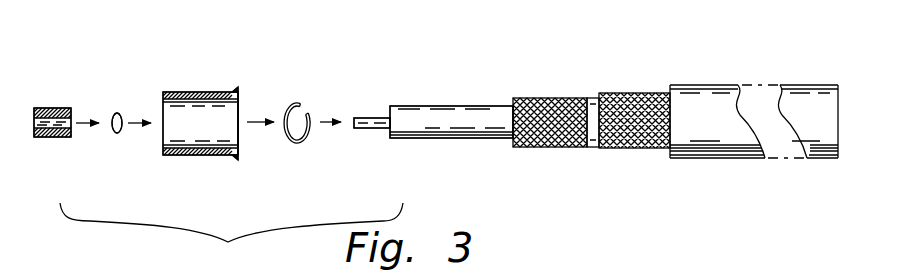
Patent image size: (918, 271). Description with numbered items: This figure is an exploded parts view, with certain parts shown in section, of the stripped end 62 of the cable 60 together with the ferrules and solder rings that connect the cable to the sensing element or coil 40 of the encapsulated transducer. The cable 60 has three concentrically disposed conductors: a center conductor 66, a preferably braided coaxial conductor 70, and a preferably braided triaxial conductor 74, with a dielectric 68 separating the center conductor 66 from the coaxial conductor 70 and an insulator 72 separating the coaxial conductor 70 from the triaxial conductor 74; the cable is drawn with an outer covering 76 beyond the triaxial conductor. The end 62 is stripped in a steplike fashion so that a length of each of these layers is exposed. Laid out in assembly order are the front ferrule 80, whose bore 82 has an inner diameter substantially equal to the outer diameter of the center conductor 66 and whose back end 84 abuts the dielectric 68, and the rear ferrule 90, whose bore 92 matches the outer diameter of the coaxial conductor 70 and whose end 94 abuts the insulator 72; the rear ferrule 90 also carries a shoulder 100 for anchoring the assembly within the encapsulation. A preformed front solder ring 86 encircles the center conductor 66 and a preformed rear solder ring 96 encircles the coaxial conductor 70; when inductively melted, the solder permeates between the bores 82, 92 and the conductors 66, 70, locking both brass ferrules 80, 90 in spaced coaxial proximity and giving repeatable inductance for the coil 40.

The sensing element 40 is at (231, 237).
The cable 60 is at (711, 70).
The stripped end of cable 62 is at (467, 92).
The center conductor 66 is at (376, 128).
The dielectric 68 is at (445, 140).
The coaxial conductor 70 is at (527, 147).
The insulator 72 is at (593, 150).
The triaxial conductor 74 is at (633, 150).
The outer jacket 76 is at (710, 133).
The front ferrule 80 is at (51, 99).
The bore of front ferrule 82 is at (40, 137).
The back end of front ferrule 84 is at (73, 118).
The front solder ring 86 is at (117, 133).
The rear ferrule 90 is at (200, 89).
The bore of rear ferrule 92 is at (173, 137).
The end of rear ferrule 94 is at (240, 110).
The rear solder ring 96 is at (297, 103).
The shoulder 100 is at (237, 89).